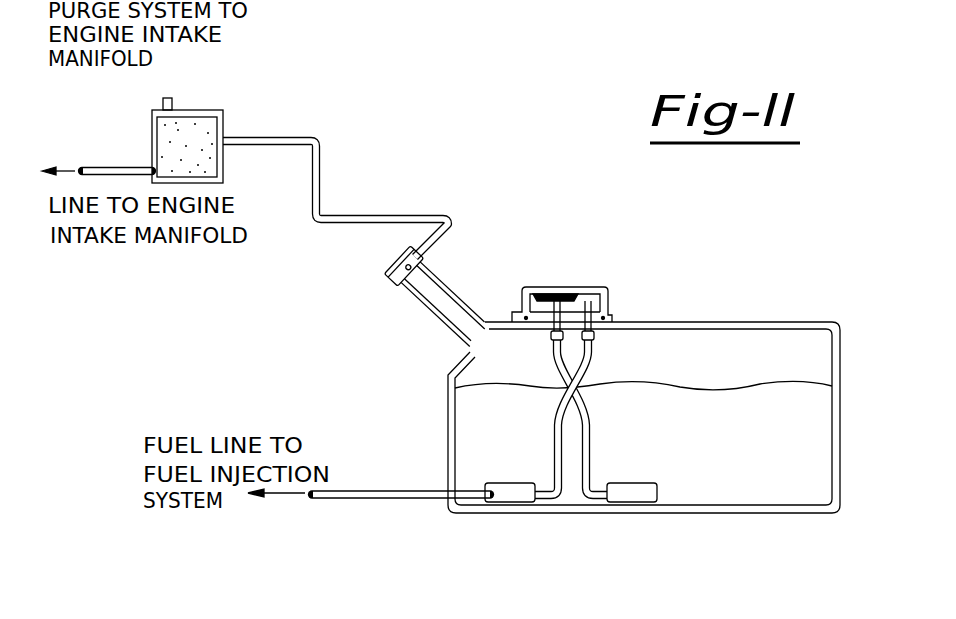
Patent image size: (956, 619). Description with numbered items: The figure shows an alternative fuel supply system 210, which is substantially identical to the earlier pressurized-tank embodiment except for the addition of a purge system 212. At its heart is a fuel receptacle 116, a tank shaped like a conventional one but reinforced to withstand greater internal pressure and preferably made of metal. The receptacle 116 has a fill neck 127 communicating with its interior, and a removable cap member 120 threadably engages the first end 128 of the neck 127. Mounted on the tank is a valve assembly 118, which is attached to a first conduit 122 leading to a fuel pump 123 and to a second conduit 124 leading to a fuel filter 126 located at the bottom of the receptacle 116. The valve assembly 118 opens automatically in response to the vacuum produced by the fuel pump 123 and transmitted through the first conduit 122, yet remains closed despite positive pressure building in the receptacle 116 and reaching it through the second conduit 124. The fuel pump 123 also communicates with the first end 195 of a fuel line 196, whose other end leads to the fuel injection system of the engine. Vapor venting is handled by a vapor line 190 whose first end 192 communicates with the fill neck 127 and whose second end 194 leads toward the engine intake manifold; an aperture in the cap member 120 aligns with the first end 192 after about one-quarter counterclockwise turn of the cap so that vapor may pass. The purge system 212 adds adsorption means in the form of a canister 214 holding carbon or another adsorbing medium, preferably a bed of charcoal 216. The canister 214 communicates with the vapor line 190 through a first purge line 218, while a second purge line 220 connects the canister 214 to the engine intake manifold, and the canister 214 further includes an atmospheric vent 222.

The fuel receptacle 116 is at (742, 320).
The valve assembly 118 is at (595, 276).
The cap member 120 is at (390, 260).
The first conduit 122 is at (594, 341).
The fuel pump 123 is at (515, 500).
The second conduit 124 is at (590, 477).
The fuel filter 126 is at (638, 500).
The fill neck 127 is at (447, 283).
The first end of the neck 128 is at (398, 283).
The vapor line 190 is at (376, 216).
The first end of the vapor line 192 is at (456, 222).
The second end of the vapor line 194 is at (415, 296).
The first end of the fuel line 195 is at (382, 500).
The fuel line 196 is at (356, 490).
The alternative fuel supply system 210 is at (768, 240).
The purge system 212 is at (282, 153).
The canister 214 is at (262, 118).
The bed of charcoal 216 is at (180, 165).
The first purge line 218 is at (320, 168).
The second purge line 220 is at (115, 167).
The atmospheric vent 222 is at (172, 101).